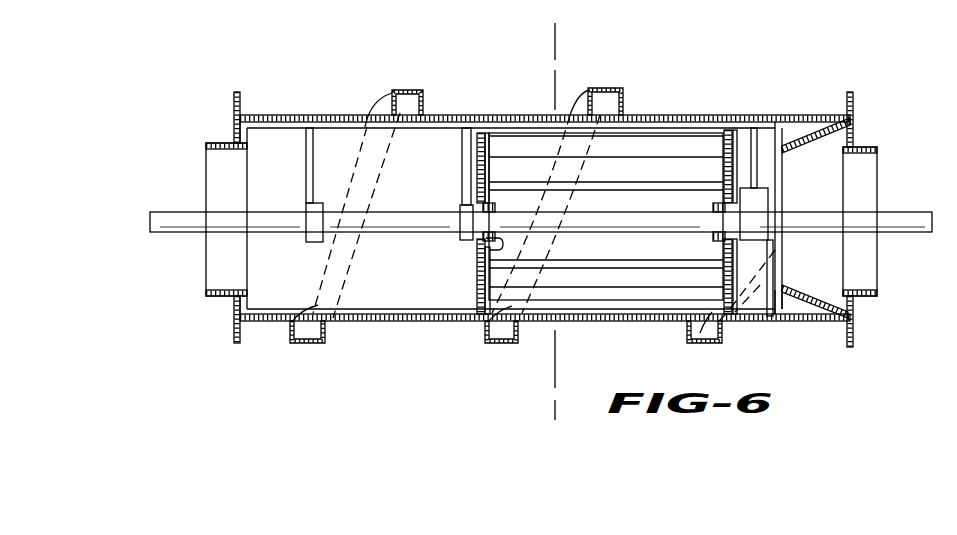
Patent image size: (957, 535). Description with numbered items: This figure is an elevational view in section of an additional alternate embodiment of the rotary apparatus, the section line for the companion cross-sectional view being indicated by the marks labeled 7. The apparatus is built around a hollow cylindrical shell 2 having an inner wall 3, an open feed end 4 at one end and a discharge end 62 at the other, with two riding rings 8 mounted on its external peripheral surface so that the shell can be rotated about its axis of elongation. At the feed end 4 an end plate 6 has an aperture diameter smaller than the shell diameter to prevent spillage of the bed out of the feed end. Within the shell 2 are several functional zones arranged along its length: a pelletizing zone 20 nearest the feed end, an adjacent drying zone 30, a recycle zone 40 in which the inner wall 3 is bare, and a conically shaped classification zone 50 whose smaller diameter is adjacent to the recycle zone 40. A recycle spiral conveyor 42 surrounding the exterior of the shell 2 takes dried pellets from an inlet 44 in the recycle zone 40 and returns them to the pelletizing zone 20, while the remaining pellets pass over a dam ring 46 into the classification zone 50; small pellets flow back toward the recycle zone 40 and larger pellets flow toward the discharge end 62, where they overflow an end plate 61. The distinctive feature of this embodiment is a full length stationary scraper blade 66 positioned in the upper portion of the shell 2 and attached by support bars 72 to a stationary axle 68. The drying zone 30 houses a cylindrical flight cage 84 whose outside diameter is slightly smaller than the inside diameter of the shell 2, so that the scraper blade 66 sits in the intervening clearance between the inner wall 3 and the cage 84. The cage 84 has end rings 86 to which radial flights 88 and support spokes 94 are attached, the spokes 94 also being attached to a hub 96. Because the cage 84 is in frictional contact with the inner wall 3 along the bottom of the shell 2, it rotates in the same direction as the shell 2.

The hollow cylindrical shell 2 is at (441, 114).
The inner wall 3 is at (346, 116).
The feed end 4 is at (215, 183).
The end plate 6 is at (247, 301).
The section line 7- 7 is at (550, 27).
The riding rings 8 is at (241, 93).
The pelletizing zone 20 is at (426, 284).
The drying zone 30 is at (648, 259).
The recycle zone 40 is at (770, 151).
The recycle spiral conveyor 42 is at (410, 90).
The inlet 44 is at (692, 340).
The dam ring 46 is at (783, 322).
The classification zone 50 is at (830, 274).
The end plate 61 is at (832, 332).
The discharge end 62 is at (878, 185).
The stationary scraper blade 66 is at (287, 117).
The stationary axle 68 is at (915, 233).
The support bars 72 is at (336, 178).
The cylindrical flight cage 84 is at (468, 284).
The end rings 86 is at (481, 132).
The radial flights 88 is at (670, 190).
The support spokes 94 is at (488, 141).
The hub 96 is at (486, 250).